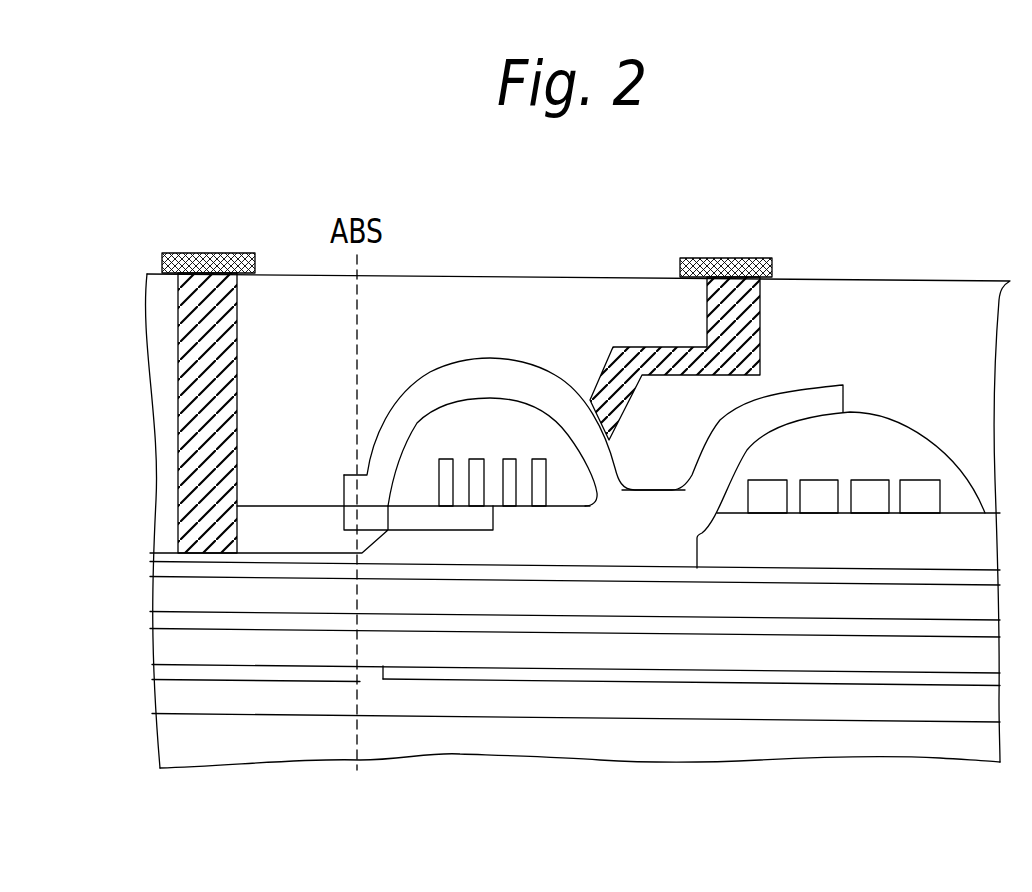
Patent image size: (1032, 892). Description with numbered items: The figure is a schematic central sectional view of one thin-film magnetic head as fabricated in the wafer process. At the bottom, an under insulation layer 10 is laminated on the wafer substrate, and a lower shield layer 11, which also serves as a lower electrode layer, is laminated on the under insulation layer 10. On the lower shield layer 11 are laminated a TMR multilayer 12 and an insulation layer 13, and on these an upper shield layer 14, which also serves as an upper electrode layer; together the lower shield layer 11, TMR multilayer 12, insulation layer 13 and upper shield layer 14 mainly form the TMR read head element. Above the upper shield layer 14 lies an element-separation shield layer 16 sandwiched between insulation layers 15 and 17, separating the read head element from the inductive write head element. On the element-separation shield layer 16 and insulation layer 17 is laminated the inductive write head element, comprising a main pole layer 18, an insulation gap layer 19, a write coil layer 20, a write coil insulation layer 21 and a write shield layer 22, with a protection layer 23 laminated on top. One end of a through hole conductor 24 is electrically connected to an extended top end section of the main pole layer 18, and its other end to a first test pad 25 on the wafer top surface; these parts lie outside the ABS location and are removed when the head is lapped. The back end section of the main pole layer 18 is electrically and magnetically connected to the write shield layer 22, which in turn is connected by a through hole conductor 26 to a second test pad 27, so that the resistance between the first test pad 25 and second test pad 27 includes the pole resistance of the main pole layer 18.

The under insulation layer 10 is at (177, 747).
The lower shield layer 11 is at (177, 697).
The TMR multilayer 12 is at (370, 680).
The insulation layer 13 is at (297, 670).
The upper shield layer 14 is at (172, 650).
The insulation layer 15 is at (170, 620).
The element-separation shield layer 16 is at (165, 595).
The insulation layer 17 is at (165, 570).
The main pole layer 18 is at (163, 553).
The insulation gap layer 19 is at (347, 540).
The write coil layer 20 is at (540, 462).
The write coil insulation layer 21 is at (458, 423).
The write shield layer 22 is at (423, 397).
The protection layer 23 is at (618, 300).
The through hole conductor 24 is at (202, 400).
The first test pad 25 is at (207, 255).
The through hole conductor 26 is at (747, 343).
The second test pad 27 is at (709, 257).